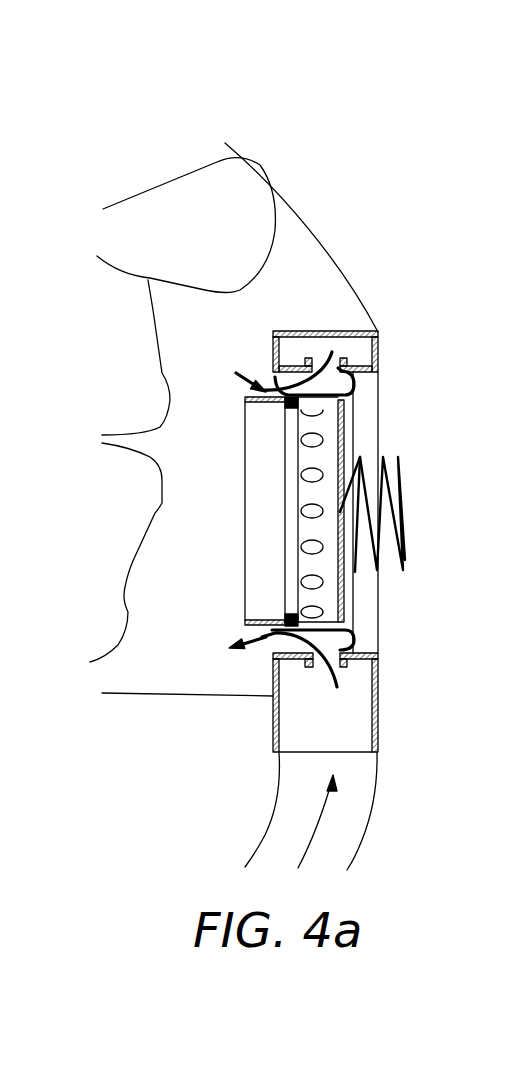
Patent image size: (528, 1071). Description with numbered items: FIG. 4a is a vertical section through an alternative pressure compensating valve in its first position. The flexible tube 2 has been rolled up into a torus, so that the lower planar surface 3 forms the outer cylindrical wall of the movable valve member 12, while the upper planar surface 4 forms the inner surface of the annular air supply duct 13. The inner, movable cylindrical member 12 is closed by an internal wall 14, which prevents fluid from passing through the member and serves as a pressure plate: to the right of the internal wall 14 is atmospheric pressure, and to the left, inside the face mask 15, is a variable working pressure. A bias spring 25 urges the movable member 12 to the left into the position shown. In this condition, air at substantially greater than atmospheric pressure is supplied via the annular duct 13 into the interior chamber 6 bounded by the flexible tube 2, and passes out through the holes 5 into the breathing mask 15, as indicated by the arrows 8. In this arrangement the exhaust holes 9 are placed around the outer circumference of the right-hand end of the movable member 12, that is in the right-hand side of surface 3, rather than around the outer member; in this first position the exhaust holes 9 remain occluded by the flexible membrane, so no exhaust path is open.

The tube 2 is at (355, 411).
The lower planar surface 3 is at (228, 403).
The upper planar surface 4 is at (395, 368).
The holes 5 is at (270, 630).
The chamber 6 is at (291, 655).
The arrows 8 is at (269, 519).
The exhaust holes 9 is at (308, 473).
The movable valve member 12 is at (257, 479).
The annular air supply duct 13 is at (348, 343).
The internal wall 14 is at (341, 437).
The face mask 15 is at (312, 245).
The bias spring 25 is at (402, 492).